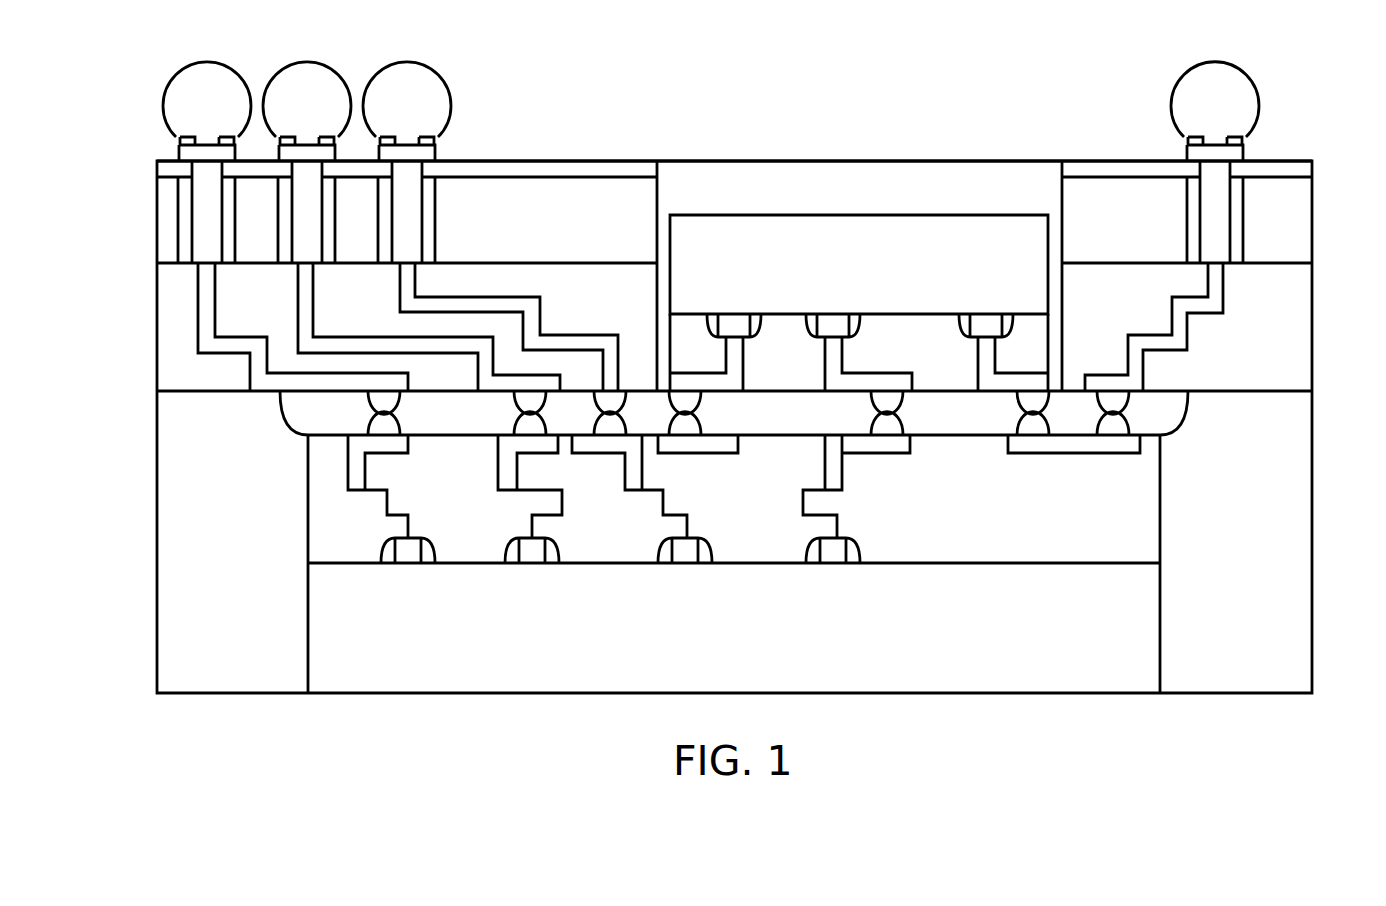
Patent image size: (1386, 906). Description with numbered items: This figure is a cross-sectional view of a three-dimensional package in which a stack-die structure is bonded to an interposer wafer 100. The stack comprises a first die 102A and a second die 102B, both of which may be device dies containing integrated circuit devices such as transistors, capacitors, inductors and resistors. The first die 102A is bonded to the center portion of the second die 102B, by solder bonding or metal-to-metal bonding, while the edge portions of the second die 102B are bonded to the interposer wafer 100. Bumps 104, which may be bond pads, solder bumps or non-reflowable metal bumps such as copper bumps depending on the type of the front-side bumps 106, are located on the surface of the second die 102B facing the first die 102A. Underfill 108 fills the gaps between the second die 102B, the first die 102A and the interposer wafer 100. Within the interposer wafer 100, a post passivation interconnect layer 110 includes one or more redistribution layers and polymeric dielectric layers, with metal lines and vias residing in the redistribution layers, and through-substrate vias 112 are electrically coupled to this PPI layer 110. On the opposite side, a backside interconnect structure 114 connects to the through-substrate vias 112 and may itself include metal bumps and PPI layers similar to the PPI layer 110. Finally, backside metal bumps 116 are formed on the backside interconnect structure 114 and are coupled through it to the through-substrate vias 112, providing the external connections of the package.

The interposer wafer 100 is at (1318, 62).
The first die 102A is at (885, 277).
The second die 102B is at (1168, 438).
The bumps 104 is at (1117, 423).
The front-side bumps 106 is at (382, 400).
The underfill 108 is at (800, 423).
The post passivation interconnect (PPI) layer 110 is at (152, 264).
The through-substrate vias (TSVs) 112 is at (403, 248).
The backside interconnect structure 114 is at (152, 135).
The backside metal bumps 116 is at (188, 113).